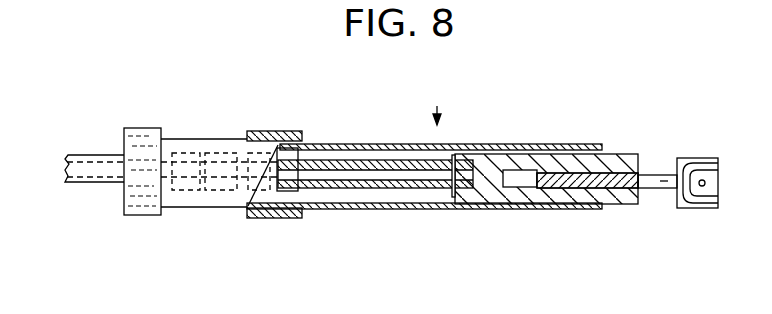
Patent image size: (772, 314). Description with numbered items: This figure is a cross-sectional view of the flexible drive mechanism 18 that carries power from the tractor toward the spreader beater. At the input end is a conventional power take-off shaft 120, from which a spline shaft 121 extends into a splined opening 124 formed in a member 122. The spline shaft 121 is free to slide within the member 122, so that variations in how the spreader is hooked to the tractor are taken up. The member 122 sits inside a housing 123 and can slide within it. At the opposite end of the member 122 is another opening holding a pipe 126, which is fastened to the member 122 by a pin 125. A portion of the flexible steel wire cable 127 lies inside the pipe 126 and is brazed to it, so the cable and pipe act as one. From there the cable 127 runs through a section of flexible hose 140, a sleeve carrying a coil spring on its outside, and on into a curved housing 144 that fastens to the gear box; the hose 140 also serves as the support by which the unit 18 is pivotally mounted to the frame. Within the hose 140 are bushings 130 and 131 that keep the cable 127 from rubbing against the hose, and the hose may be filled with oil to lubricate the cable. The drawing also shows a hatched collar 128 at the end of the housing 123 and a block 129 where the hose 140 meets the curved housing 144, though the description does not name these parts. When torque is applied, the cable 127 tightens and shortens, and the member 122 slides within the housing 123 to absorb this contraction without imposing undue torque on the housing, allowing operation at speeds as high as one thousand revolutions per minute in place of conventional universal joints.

The flexible drive mechanism 18 is at (437, 102).
The power take-off shaft 120 is at (697, 158).
The spline shaft 121 is at (660, 175).
The member 122 is at (612, 205).
The housing 123 is at (533, 146).
The splined opening 124 is at (535, 188).
The pin 125 is at (458, 199).
The pipe 126 is at (430, 195).
The flexible steel wire cable 127 is at (355, 168).
The collar 128 is at (298, 132).
The end block 129 is at (148, 128).
The bushing 130 is at (192, 153).
The bushing 131 is at (225, 153).
The flexible hose 140 is at (192, 207).
The curved housing 144 is at (98, 183).